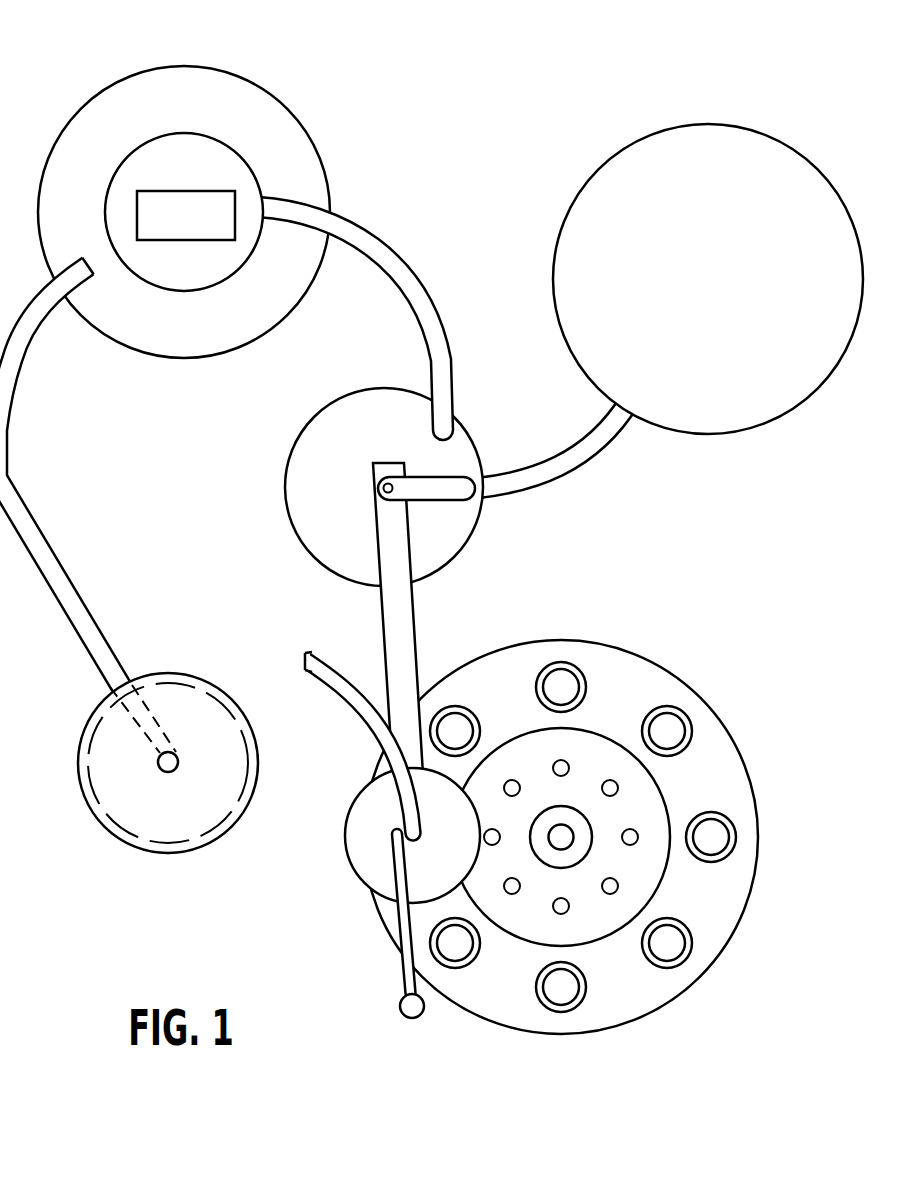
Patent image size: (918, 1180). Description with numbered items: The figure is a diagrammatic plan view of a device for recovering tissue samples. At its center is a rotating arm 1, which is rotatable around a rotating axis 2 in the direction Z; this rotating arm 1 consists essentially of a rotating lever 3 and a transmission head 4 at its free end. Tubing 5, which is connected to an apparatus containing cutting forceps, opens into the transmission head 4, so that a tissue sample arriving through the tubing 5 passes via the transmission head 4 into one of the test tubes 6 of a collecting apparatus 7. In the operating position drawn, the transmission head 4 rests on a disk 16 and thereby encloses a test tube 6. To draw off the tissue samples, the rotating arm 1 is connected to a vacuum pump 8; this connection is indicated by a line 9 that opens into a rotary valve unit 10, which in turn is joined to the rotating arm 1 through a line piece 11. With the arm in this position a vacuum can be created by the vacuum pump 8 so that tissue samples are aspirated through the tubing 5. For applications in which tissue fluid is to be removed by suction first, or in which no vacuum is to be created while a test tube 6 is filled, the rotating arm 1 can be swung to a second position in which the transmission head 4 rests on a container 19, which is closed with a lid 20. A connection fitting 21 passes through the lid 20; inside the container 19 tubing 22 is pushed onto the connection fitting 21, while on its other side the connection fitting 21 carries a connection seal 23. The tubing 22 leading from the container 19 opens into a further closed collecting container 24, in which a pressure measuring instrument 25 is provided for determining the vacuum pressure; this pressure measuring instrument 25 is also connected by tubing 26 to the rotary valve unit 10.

The rotating arm 1 is at (430, 620).
The rotating axis 2 is at (380, 490).
The rotating lever 3 is at (386, 614).
The transmission head 4 is at (343, 881).
The tubing 5 is at (345, 686).
The test tubes 6 is at (660, 716).
The collecting apparatus 7 is at (730, 713).
The vacuum pump 8 is at (690, 292).
The line 9 is at (580, 458).
The rotary valve unit 10 is at (486, 424).
The line piece 11 is at (457, 493).
The disk 16 is at (732, 785).
The container 19 is at (97, 839).
The lid 20 is at (160, 830).
The connection fitting 21 is at (174, 788).
The tubing 22 is at (84, 607).
The connection seal 23 is at (178, 756).
The collecting container 24 is at (252, 69).
The pressure measuring instrument 25 is at (163, 225).
The tubing 26 is at (394, 262).
The direction z Z is at (259, 813).